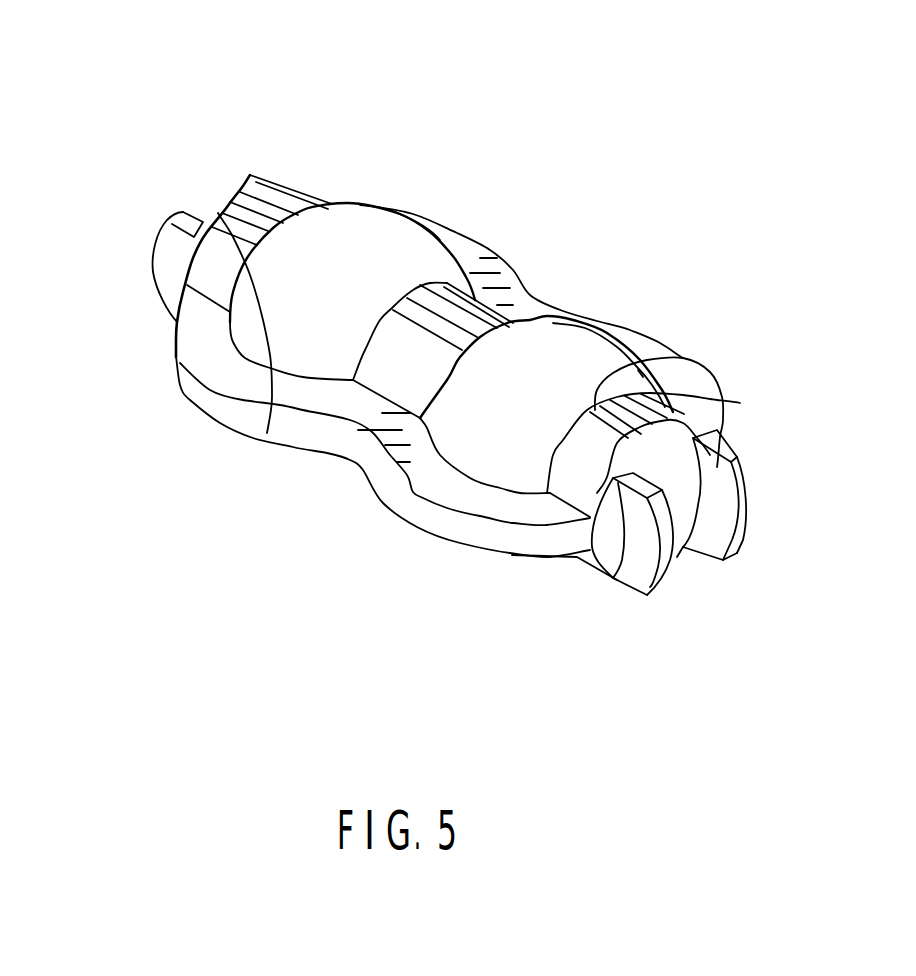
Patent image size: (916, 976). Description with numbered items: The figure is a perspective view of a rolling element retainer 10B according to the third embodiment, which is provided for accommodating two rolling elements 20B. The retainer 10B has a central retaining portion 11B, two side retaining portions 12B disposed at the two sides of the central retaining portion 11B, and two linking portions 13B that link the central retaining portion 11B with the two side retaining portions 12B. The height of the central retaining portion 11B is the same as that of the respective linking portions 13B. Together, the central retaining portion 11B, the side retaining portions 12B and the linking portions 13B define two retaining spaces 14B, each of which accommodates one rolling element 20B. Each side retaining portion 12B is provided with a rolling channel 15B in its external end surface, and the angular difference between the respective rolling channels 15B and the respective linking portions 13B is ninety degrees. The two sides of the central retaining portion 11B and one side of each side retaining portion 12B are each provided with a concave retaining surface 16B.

The retainer 10B is at (495, 238).
The central retaining portion 11B is at (412, 380).
The side retaining portion 12B is at (218, 283).
The linking portion 13B is at (630, 345).
The retaining space 14B is at (308, 378).
The rolling channel 15B is at (220, 217).
The concave retaining surface 16B is at (267, 433).
The rolling element 20B is at (348, 198).